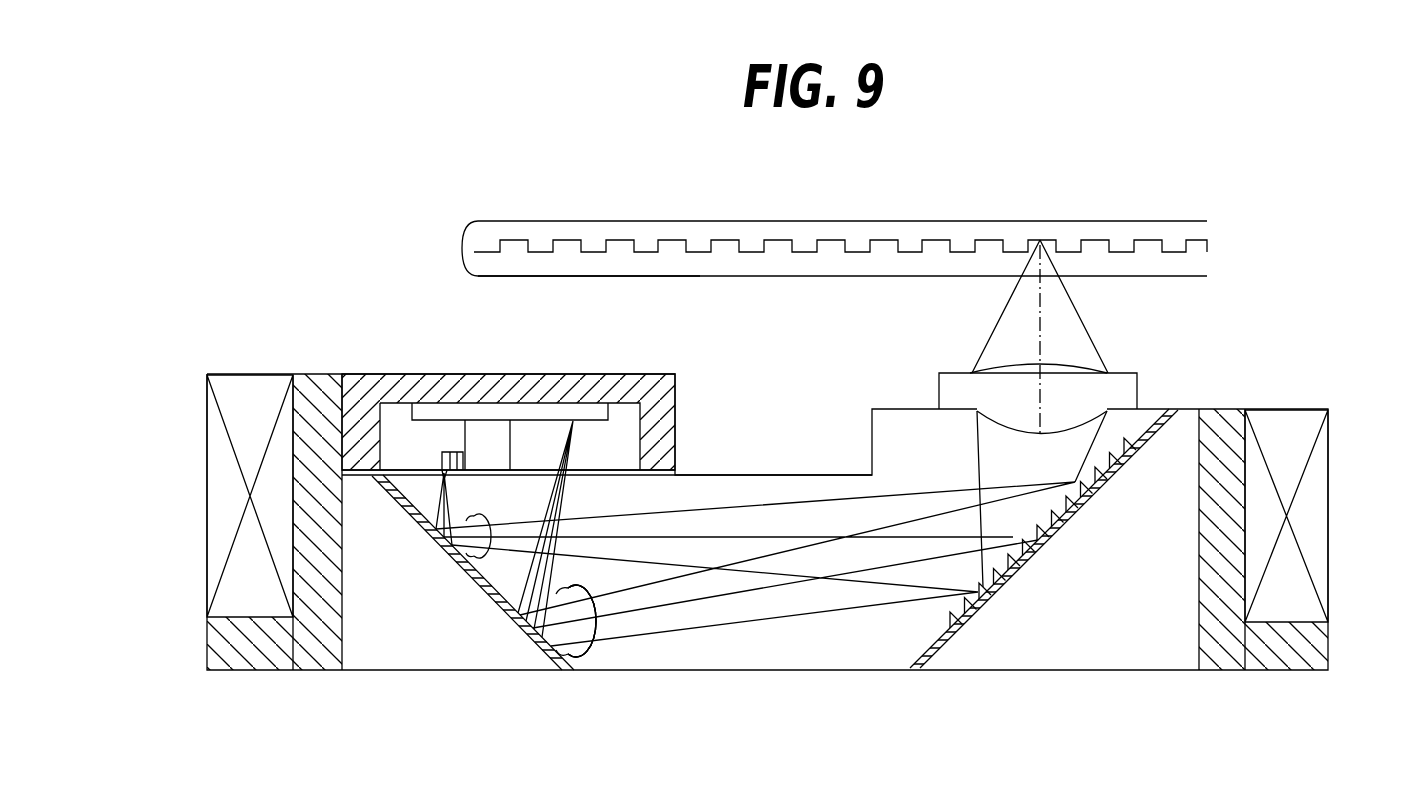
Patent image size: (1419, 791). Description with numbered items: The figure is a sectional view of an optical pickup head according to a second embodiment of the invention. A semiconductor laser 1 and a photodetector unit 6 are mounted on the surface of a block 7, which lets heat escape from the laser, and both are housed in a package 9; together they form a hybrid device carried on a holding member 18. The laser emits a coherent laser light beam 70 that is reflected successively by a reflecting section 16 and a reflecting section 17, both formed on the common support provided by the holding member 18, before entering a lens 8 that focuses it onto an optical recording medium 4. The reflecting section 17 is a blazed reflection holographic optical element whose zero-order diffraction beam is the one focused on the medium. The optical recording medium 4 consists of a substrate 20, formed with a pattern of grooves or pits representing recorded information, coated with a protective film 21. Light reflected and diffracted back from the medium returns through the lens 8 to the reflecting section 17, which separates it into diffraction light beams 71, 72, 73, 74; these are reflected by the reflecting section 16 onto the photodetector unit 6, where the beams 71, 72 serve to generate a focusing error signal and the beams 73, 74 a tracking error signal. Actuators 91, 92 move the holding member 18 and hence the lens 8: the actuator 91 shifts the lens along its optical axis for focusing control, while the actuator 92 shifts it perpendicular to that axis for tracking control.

The semiconductor laser 1 is at (439, 458).
The optical recording medium 4 is at (937, 221).
The photodetector unit 6 is at (550, 408).
The block 7 is at (489, 436).
The lens 8 is at (1127, 387).
The package 9 is at (672, 384).
The reflecting section 16 is at (398, 506).
The reflecting section 17 is at (935, 650).
The holding member 18 is at (1099, 650).
The substrate 20 is at (487, 250).
The protective film 21 is at (487, 265).
The laser light beam 70 is at (473, 562).
The diffraction light beam 71 is at (594, 655).
The diffraction light beam 72 is at (594, 655).
The diffraction light beam 73 is at (594, 655).
The diffraction light beam 74 is at (594, 655).
The actuator 91 is at (223, 525).
The actuator 92 is at (1318, 573).